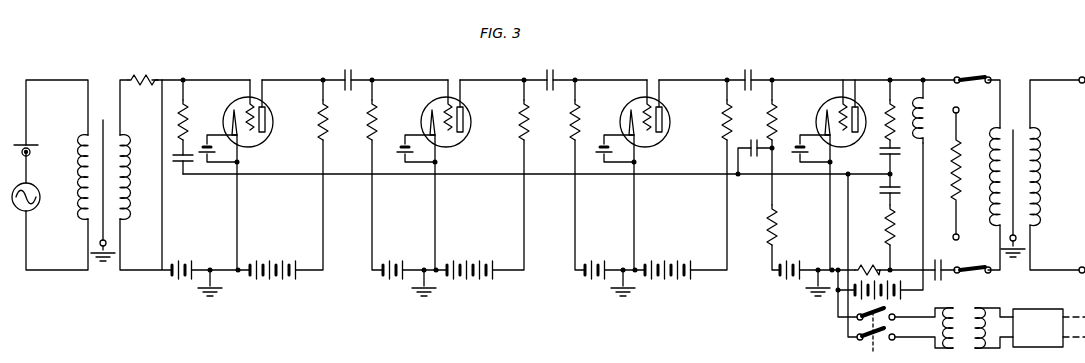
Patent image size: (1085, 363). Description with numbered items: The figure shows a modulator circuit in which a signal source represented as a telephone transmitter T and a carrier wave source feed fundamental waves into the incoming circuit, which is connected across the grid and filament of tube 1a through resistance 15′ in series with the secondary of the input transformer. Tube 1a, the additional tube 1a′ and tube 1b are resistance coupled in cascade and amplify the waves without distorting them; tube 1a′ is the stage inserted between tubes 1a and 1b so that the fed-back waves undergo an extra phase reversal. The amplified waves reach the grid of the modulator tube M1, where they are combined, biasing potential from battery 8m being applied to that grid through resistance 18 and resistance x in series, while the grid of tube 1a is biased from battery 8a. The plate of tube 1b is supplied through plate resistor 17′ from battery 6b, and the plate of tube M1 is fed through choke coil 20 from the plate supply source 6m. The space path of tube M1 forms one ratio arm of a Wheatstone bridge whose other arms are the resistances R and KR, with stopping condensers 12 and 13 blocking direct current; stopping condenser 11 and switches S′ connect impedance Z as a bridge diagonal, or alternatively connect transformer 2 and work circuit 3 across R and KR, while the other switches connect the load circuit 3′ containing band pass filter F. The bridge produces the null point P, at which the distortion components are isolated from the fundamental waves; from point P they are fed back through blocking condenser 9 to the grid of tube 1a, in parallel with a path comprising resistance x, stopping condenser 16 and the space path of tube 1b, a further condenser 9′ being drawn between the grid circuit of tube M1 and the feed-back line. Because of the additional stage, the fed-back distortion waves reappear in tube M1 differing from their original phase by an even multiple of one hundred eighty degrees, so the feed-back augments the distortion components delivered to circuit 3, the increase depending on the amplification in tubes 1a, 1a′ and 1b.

The resistance 15′ is at (143, 79).
The blocking condenser 9 is at (183, 157).
The telephone transmitter T is at (38, 141).
The grid biasing battery 8a is at (180, 280).
The vacuum tube 1a is at (228, 107).
The plate resistor 17′ is at (318, 122).
The vacuum tube 1a′ is at (434, 107).
The vacuum tube 1b is at (631, 107).
The battery 6b is at (683, 277).
The stopping condenser 16 is at (753, 73).
The resistance x is at (768, 122).
The modulator tube M1 is at (823, 107).
The condenser 9′ is at (754, 160).
The resistance 18 is at (767, 228).
The battery 8m is at (796, 278).
The ratio arm resistance R is at (883, 118).
The choke coil 20 is at (918, 112).
The stopping condenser 12 is at (889, 155).
The null point P is at (893, 175).
The stopping condenser 13 is at (881, 191).
The ratio arm resistance KR is at (881, 218).
The stopping condenser 11 is at (938, 259).
The impedance Z is at (953, 164).
The switches S′ is at (975, 73).
The transformer 2 is at (1010, 120).
The work circuit 3 is at (1061, 266).
The plate voltage supply source 6m is at (857, 298).
The load circuit 3′ is at (1004, 308).
The band pass filter F is at (1037, 347).